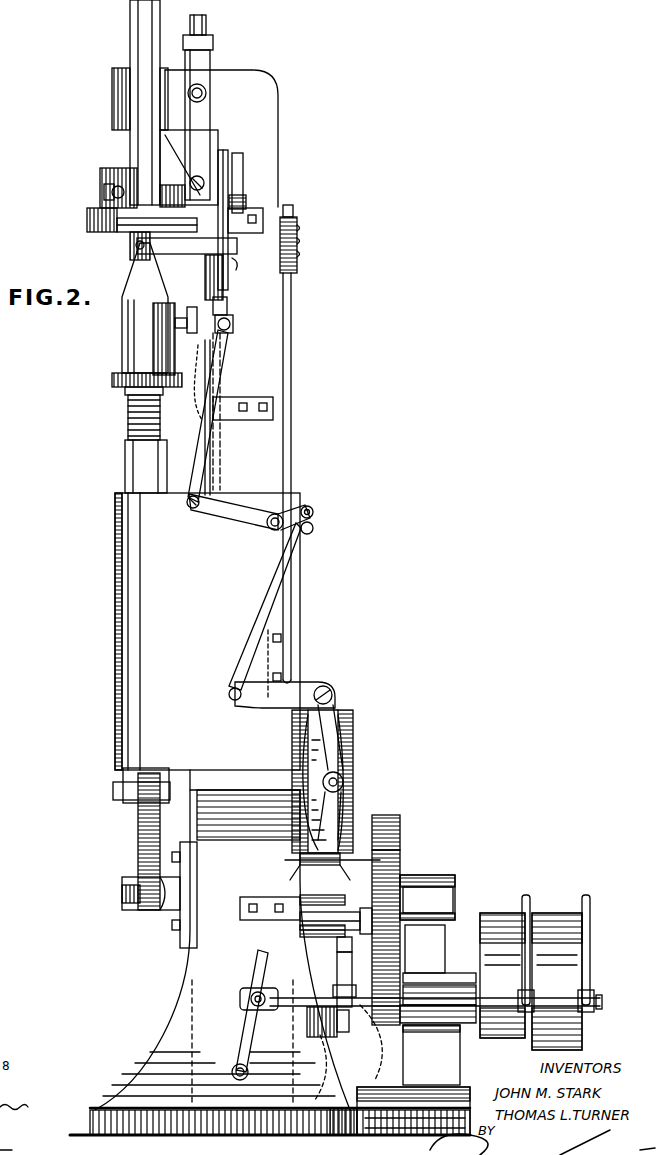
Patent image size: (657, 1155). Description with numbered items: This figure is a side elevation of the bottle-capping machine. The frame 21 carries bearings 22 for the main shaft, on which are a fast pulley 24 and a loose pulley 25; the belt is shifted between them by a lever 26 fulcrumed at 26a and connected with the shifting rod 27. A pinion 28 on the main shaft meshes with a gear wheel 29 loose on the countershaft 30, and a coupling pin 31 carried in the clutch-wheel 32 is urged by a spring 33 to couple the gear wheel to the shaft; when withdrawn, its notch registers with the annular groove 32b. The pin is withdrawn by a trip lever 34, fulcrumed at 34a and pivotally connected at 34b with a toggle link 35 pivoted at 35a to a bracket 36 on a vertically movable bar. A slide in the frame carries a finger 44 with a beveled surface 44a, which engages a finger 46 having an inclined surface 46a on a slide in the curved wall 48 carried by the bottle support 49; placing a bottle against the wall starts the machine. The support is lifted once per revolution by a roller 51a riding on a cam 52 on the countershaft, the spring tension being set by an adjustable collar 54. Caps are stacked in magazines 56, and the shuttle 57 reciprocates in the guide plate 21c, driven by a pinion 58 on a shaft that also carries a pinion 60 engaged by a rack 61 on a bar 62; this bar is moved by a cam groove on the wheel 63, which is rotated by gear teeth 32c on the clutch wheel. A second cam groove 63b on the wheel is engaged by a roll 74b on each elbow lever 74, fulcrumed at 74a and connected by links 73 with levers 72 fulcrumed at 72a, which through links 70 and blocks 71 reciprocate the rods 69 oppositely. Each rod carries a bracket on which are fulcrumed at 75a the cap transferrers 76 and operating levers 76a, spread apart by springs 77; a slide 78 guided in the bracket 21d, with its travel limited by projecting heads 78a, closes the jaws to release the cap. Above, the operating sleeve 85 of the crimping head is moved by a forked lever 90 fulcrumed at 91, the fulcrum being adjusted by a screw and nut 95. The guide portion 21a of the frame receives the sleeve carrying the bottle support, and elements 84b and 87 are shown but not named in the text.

The frame 21 is at (87, 216).
The guide portion of frame 21a is at (115, 670).
The guide plate 21c is at (255, 226).
The bracket 21d is at (258, 203).
The bearings 22 is at (431, 1055).
The fast pulley 24 is at (500, 913).
The loose pulley 25 is at (555, 913).
The lever 26 is at (244, 1030).
The fulcrum of lever 26a is at (250, 1070).
The shifting rod 27 is at (545, 998).
The pinion 28 is at (413, 1101).
The gear wheel 29 is at (400, 824).
The countershaft 30 is at (456, 890).
The coupling pin 31 is at (368, 850).
The clutch-wheel 32 is at (320, 910).
The annular groove 32b is at (337, 948).
The gear teeth 32c is at (296, 882).
The spring 33 is at (357, 1090).
The trip lever 34 is at (336, 975).
The fulcrum of trip lever 34a is at (300, 930).
The pivotal connection 34b is at (400, 960).
The toggle link 35 is at (352, 1012).
The pivot of toggle link 35a is at (360, 1044).
The bracket 36 is at (325, 1037).
The finger 44 is at (203, 405).
The beveled surface 44a is at (200, 385).
The finger 46 is at (192, 307).
The inclined surface 46a is at (160, 330).
The curved wall 48 is at (150, 345).
The bottle support 49 is at (115, 388).
The roller 51a is at (128, 800).
The cam 52 is at (138, 836).
The collar 54 is at (125, 466).
The magazines 56 is at (134, 12).
The shuttle 57 is at (117, 226).
The pinion 58 is at (185, 260).
The pinion 60 is at (297, 255).
The rack 61 is at (294, 212).
The bar 62 is at (292, 360).
The wheel 63 is at (350, 748).
The cam groove 63b is at (343, 822).
The rods 69 is at (221, 376).
The links 70 is at (204, 438).
The blocks 71 is at (233, 325).
The levers 72 is at (307, 505).
The fulcrum of levers 72a is at (273, 513).
The links 73 is at (290, 575).
The elbow levers 74 is at (292, 690).
The fulcrum of elbow levers 74a is at (333, 702).
The roll 74b is at (345, 782).
The fulcrum 75a is at (135, 250).
The cap transferrers 76 is at (132, 244).
The operating levers 76a is at (223, 285).
The springs 77 is at (238, 267).
The slide 78 is at (245, 203).
The projecting heads 78a is at (240, 190).
The guide 84b is at (112, 140).
The operating sleeve 85 is at (100, 172).
The pin 87 is at (104, 191).
The forked lever 90 is at (195, 160).
The fulcrum 91 is at (205, 176).
The nut 95 is at (212, 30).